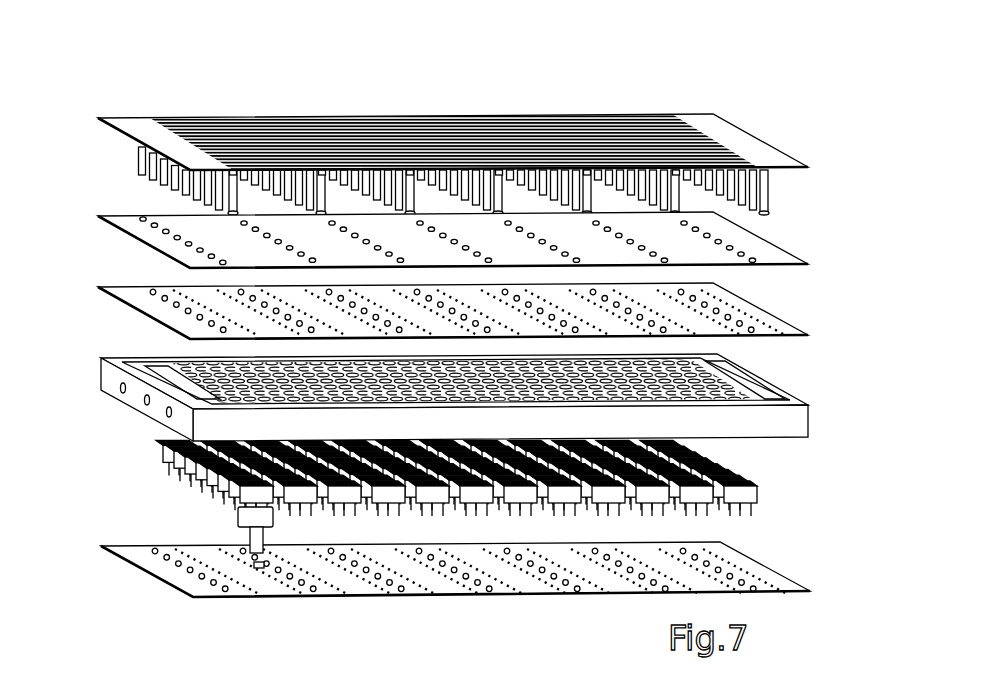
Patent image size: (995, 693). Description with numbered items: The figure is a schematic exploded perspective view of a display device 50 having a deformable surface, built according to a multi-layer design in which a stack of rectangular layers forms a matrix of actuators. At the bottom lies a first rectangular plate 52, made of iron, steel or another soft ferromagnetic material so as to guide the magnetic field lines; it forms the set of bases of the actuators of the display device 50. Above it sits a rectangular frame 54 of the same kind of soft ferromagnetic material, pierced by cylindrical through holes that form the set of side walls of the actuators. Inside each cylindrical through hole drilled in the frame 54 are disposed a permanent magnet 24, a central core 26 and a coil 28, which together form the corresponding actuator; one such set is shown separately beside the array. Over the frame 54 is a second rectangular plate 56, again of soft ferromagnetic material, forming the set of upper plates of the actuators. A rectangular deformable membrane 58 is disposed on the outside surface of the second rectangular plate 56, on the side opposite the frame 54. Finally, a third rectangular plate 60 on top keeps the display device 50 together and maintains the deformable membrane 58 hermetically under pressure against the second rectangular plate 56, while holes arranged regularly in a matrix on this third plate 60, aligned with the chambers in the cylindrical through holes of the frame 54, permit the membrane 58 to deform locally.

The display device 50 is at (128, 66).
The third rectangular plate 60 is at (822, 137).
The rectangular deformable membrane 58 is at (818, 230).
The second rectangular plate 56 is at (830, 302).
The rectangular frame 54 is at (102, 416).
The first rectangular plate 52 is at (115, 586).
The coil 28 is at (238, 518).
The central core 26 is at (250, 540).
The permanent magnet 24 is at (263, 568).